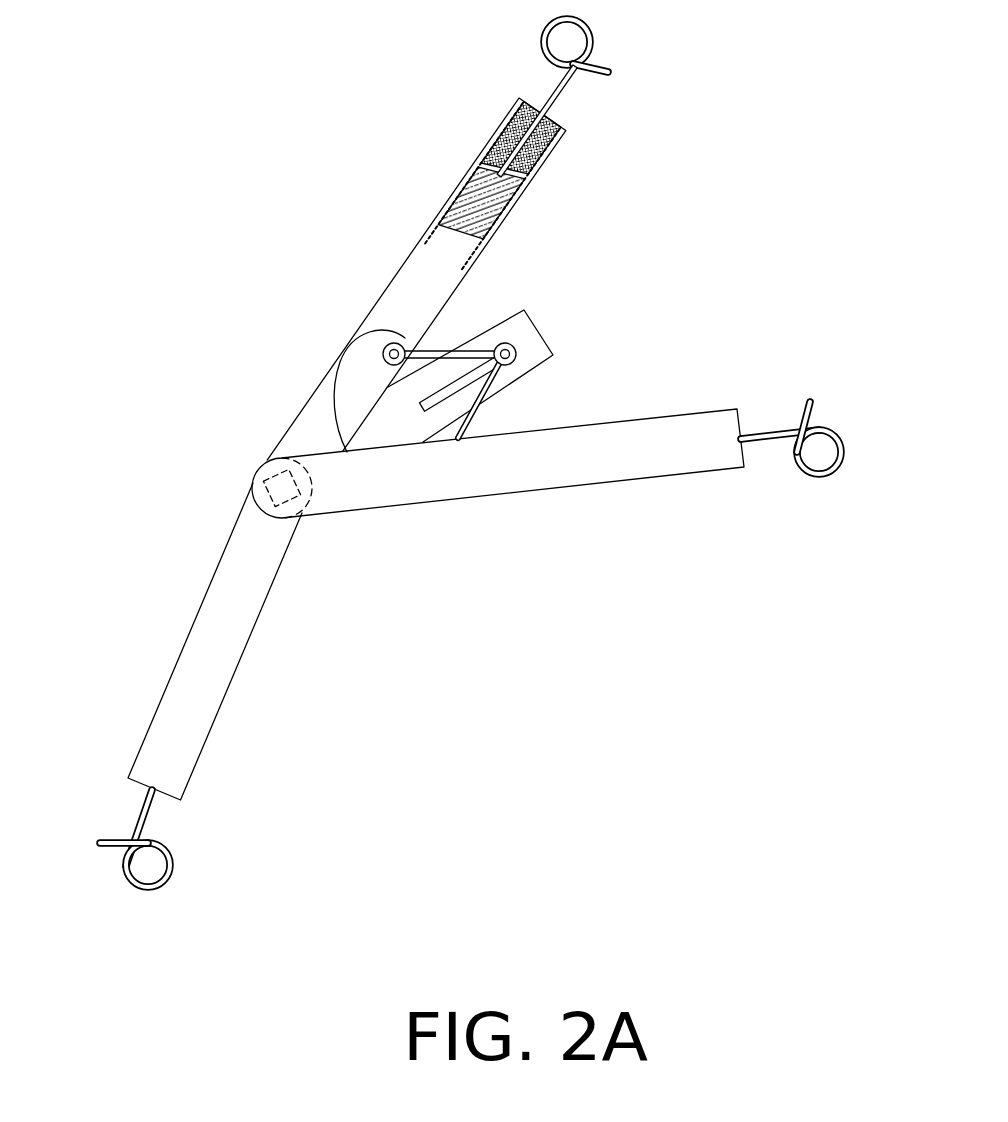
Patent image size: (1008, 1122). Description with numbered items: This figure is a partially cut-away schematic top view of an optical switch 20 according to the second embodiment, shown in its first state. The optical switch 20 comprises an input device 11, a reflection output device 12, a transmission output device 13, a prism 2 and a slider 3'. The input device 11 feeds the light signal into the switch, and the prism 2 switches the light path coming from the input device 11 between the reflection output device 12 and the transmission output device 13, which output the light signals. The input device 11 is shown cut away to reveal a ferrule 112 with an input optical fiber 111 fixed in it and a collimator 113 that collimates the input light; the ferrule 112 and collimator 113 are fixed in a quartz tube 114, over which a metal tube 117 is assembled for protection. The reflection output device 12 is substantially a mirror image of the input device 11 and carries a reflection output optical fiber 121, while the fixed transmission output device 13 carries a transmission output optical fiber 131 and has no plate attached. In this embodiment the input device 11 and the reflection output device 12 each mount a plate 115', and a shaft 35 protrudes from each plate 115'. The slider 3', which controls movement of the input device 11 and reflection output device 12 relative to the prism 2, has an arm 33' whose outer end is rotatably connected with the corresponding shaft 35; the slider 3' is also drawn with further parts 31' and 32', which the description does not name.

The input device 11 is at (430, 285).
The reflection output device 12 is at (665, 460).
The transmission output device 13 is at (218, 617).
The prism 2 is at (291, 499).
The optical switch 20 is at (636, 294).
The shaft 35 is at (394, 350).
The input optical fiber 111 is at (561, 88).
The ferrule 112 is at (547, 160).
The collimator 113 is at (470, 178).
The quartz tube 114 is at (500, 118).
The metal tube 117 is at (515, 98).
The reflection output optical fiber 121 is at (826, 432).
The transmission output optical fiber 131 is at (153, 883).
The plate 115' is at (316, 361).
The slider 3' is at (574, 387).
The plate 31' is at (501, 361).
The bar 32' is at (512, 390).
The arm 33' is at (511, 288).